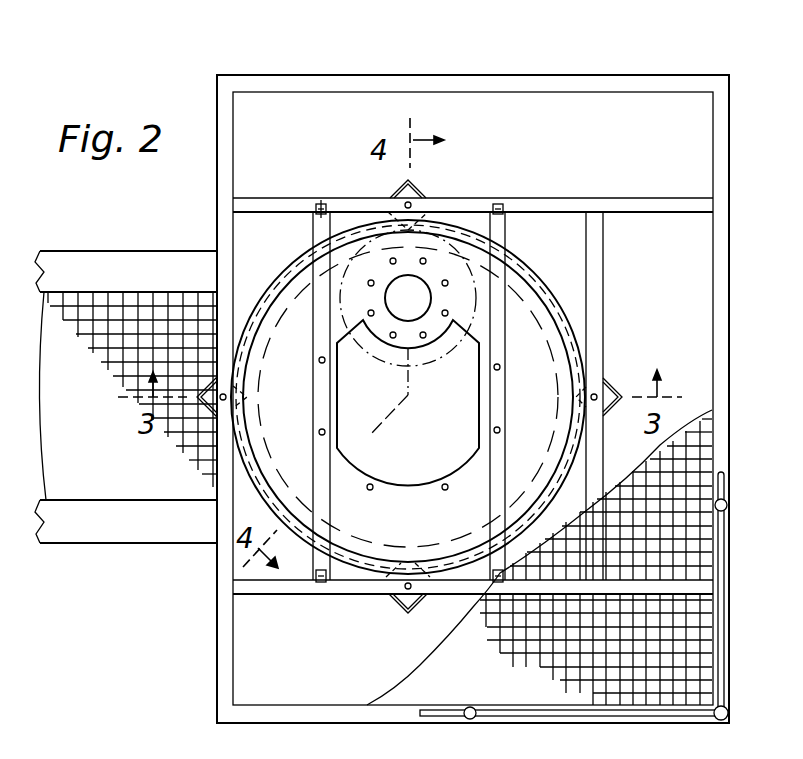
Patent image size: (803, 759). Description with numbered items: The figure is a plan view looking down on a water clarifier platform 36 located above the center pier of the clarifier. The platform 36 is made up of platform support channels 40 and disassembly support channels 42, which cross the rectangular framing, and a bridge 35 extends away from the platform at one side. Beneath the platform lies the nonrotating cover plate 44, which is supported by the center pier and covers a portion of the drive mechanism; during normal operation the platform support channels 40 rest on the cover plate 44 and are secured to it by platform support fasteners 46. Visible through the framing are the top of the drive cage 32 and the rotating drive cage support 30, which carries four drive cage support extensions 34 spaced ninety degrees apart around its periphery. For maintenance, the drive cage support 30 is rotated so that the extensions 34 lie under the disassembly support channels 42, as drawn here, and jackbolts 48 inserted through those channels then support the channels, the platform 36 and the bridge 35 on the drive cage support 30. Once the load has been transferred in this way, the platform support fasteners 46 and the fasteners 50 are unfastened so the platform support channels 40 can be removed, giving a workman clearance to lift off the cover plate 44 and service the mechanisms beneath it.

The drive cage support 30 is at (334, 216).
The drive cage 32 is at (420, 186).
The drive cage support extensions 34 is at (428, 208).
The bridge 35 is at (95, 251).
The platform 36 is at (655, 75).
The platform support channels 40 is at (505, 215).
The disassembly support channels 42 is at (644, 198).
The cover plate 44 is at (557, 322).
The platform support fasteners 46 is at (322, 432).
The jackbolts 48 is at (606, 386).
The fasteners 50 is at (320, 202).